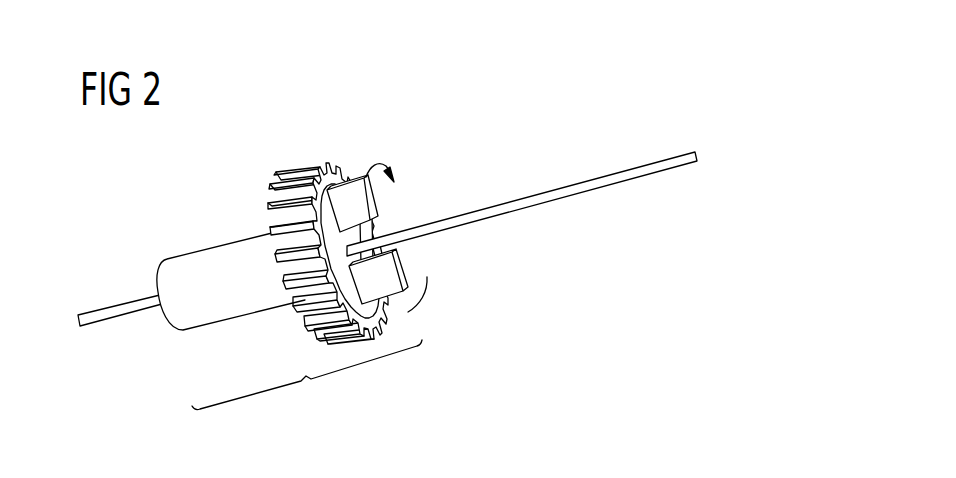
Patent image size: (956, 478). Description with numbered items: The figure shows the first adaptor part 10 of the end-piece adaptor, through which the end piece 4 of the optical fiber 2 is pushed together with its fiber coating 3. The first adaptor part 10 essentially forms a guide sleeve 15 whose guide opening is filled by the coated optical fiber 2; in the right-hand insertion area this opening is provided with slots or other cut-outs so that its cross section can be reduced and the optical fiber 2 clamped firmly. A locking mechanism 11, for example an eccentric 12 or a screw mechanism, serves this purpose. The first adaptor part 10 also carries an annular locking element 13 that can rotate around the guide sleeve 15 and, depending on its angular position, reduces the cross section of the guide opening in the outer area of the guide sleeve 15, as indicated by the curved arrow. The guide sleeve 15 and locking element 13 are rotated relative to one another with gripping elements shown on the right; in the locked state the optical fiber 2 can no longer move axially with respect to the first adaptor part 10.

The optical fiber 2 is at (522, 177).
The fiber coating 3 is at (622, 176).
The end piece 4 is at (122, 307).
The first adaptor part 10 is at (427, 259).
The locking mechanism 11 is at (512, 201).
The eccentric 12 is at (512, 201).
The annular locking element 13 is at (280, 168).
The guide sleeve 15 is at (207, 260).